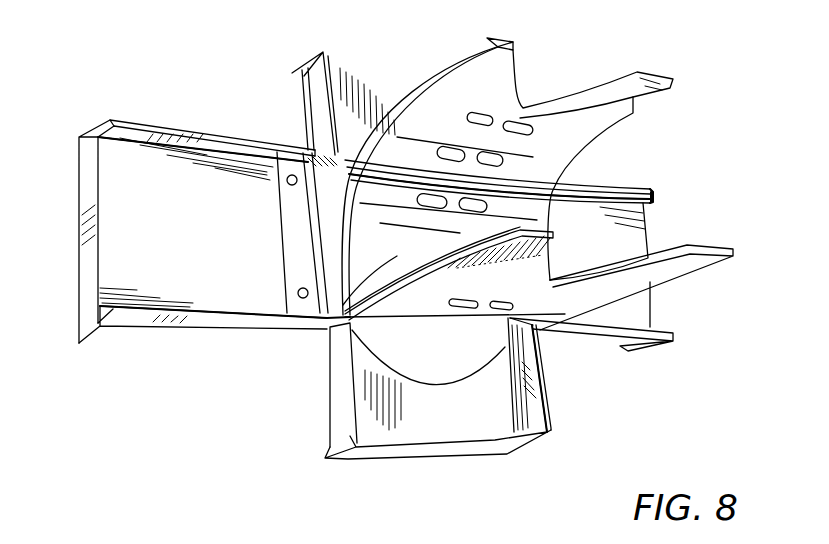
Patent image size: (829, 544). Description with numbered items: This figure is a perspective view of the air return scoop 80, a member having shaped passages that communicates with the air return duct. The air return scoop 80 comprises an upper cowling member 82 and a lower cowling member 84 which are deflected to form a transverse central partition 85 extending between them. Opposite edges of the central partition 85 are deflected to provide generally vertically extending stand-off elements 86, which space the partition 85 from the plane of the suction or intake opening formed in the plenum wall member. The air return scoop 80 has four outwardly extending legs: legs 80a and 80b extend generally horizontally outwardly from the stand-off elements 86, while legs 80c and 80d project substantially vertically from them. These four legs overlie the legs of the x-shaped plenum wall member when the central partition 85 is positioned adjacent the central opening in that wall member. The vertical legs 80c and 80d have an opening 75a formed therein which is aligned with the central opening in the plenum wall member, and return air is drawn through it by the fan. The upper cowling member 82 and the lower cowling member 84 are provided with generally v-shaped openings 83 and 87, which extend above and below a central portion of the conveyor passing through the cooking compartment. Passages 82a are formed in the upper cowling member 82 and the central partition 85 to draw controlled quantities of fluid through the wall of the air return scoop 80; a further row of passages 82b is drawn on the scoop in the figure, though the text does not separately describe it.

The air return scoop 80 is at (212, 330).
The leg 80a is at (182, 178).
The leg 80b is at (570, 220).
The leg 80c is at (432, 40).
The leg 80d is at (390, 413).
The upper cowling member 82 is at (600, 118).
The passages 82a is at (480, 120).
The lower slots 82b is at (493, 303).
The v-shaped opening 83 is at (540, 88).
The lower cowling member 84 is at (637, 277).
The transverse central partition 85 is at (330, 333).
The stand-off elements 86 is at (333, 175).
The v-shaped opening 87 is at (657, 250).
The opening 75a is at (505, 347).